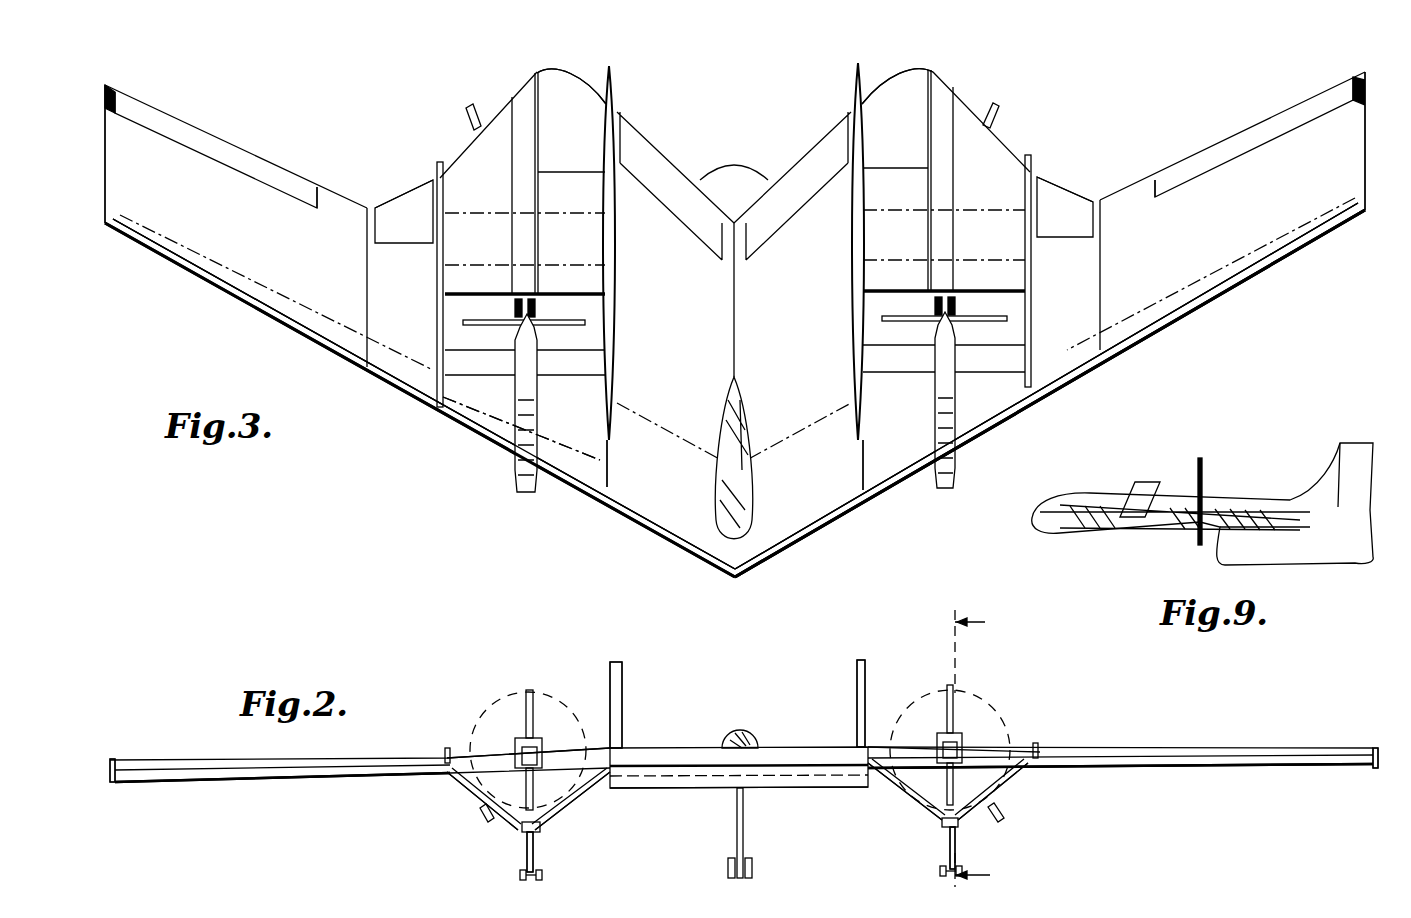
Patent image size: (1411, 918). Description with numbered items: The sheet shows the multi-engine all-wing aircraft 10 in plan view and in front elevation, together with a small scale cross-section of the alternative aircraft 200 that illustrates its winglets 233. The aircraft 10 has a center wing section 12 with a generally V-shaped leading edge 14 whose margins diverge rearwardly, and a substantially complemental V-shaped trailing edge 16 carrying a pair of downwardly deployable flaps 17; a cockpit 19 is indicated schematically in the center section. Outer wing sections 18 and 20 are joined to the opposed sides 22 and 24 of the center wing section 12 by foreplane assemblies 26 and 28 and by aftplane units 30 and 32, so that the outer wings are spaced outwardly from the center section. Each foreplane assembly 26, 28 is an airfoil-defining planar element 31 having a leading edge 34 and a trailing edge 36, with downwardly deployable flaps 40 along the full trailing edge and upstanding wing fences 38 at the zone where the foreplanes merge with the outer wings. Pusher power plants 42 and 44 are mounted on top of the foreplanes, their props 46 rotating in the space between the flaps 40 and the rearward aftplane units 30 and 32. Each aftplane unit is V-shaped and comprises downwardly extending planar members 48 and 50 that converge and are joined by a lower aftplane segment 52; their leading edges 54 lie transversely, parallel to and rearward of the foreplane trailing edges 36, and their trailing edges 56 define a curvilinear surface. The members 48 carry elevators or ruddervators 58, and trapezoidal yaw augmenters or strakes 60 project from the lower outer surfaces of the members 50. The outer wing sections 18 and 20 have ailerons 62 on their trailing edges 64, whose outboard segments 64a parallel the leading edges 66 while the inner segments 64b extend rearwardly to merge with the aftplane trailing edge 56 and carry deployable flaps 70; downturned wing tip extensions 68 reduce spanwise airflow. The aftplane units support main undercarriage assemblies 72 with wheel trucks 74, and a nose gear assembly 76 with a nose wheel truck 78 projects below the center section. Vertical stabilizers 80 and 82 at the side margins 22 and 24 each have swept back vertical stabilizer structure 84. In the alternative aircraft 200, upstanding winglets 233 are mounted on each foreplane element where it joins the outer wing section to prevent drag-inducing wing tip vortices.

In FIG. 3, the multi-engine all-wing aircraft 10 is at (340, 445).
In FIG. 2, the multi-engine all-wing aircraft 10 is at (420, 658).
In FIG. 3, the center wing section 12 is at (700, 568).
In FIG. 2, the center wing section 12 is at (788, 748).
In FIG. 3, the leading edge 14 is at (805, 538).
In FIG. 2, the leading edge 14 is at (690, 775).
In FIG. 3, the trailing edge 16 is at (734, 215).
In FIG. 3, the downwardly deployable flaps 17 is at (734, 164).
In FIG. 3, the outer wing section 18 is at (1235, 298).
In FIG. 2, the outer wing section 18 is at (1255, 752).
In FIG. 3, the operational cockpit 19 is at (742, 396).
In FIG. 2, the operational cockpit 19 is at (743, 724).
In FIG. 3, the outer wing section 20 is at (287, 330).
In FIG. 2, the outer wing section 20 is at (215, 752).
In FIG. 3, the opposed side 22 is at (865, 455).
In FIG. 3, the opposed side 24 is at (606, 458).
In FIG. 3, the foreplane assembly 26 is at (1010, 418).
In FIG. 2, the foreplane assembly 26 is at (1000, 745).
In FIG. 3, the foreplane assembly 28 is at (577, 490).
In FIG. 2, the foreplane assembly 28 is at (462, 748).
In FIG. 3, the aftplane unit 30 is at (965, 78).
In FIG. 2, the aftplane unit 30 is at (918, 815).
In FIG. 3, the planar element 31 is at (460, 400).
In FIG. 2, the planar element 31 is at (915, 748).
In FIG. 3, the aftplane unit 32 is at (600, 70).
In FIG. 2, the aftplane unit 32 is at (512, 830).
In FIG. 3, the leading edge 34 is at (485, 440).
In FIG. 3, the trailing edge 36 is at (610, 332).
In FIG. 3, the wing fences 38 is at (436, 250).
In FIG. 2, the wing fences 38 is at (445, 752).
In FIG. 3, the downwardly deployable flaps 40 is at (597, 353).
In FIG. 3, the power plant 42 is at (945, 488).
In FIG. 2, the power plant 42 is at (960, 745).
In FIG. 3, the power plant 44 is at (512, 497).
In FIG. 2, the power plant 44 is at (515, 745).
In FIG. 3, the props 46 is at (480, 326).
In FIG. 2, the props 46 is at (533, 692).
In FIG. 3, the planar member 48 is at (595, 245).
In FIG. 2, the planar member 48 is at (590, 792).
In FIG. 3, the planar member 50 is at (462, 150).
In FIG. 2, the planar member 50 is at (455, 782).
In FIG. 3, the lower aftplane segment 52 is at (512, 100).
In FIG. 2, the lower aftplane segment 52 is at (540, 838).
In FIG. 3, the leading edges 54 is at (445, 300).
In FIG. 3, the trailing edges 56 is at (535, 73).
In FIG. 3, the elevators or ruddervators 58 is at (580, 100).
In FIG. 3, the yaw augmenters or strakes 60 is at (471, 110).
In FIG. 2, the yaw augmenters or strakes 60 is at (480, 815).
In FIG. 3, the ailerons 62 is at (197, 125).
In FIG. 3, the trailing edges 64 is at (366, 206).
In FIG. 3, the outboard segments 64a is at (333, 186).
In FIG. 3, the inner segments 64b is at (434, 180).
In FIG. 3, the leading edges 66 is at (185, 270).
In FIG. 2, the leading edges 66 is at (320, 773).
In FIG. 3, the downturned wing tip extensions 68 is at (108, 85).
In FIG. 2, the downturned wing tip extensions 68 is at (115, 785).
In FIG. 3, the deployable flaps 70 is at (395, 203).
In FIG. 2, the main undercarriage assemblies 72 is at (536, 850).
In FIG. 3, the wheel trucks 74 is at (537, 302).
In FIG. 2, the wheel trucks 74 is at (519, 875).
In FIG. 2, the nose gear assembly 76 is at (737, 830).
In FIG. 2, the nose wheel truck 78 is at (752, 862).
In FIG. 3, the vertical stabilizer 80 is at (620, 112).
In FIG. 2, the vertical stabilizer 80 is at (622, 680).
In FIG. 3, the vertical stabilizer 82 is at (845, 110).
In FIG. 2, the vertical stabilizer 82 is at (855, 676).
In FIG. 3, the swept back vertical stabilizer structure 84 is at (614, 85).
In FIG. 2, the swept back vertical stabilizer structure 84 is at (612, 664).
In FIG. 9, the conventional aircraft 200 is at (1278, 464).
In FIG. 9, the upstanding winglets 233 is at (1145, 480).